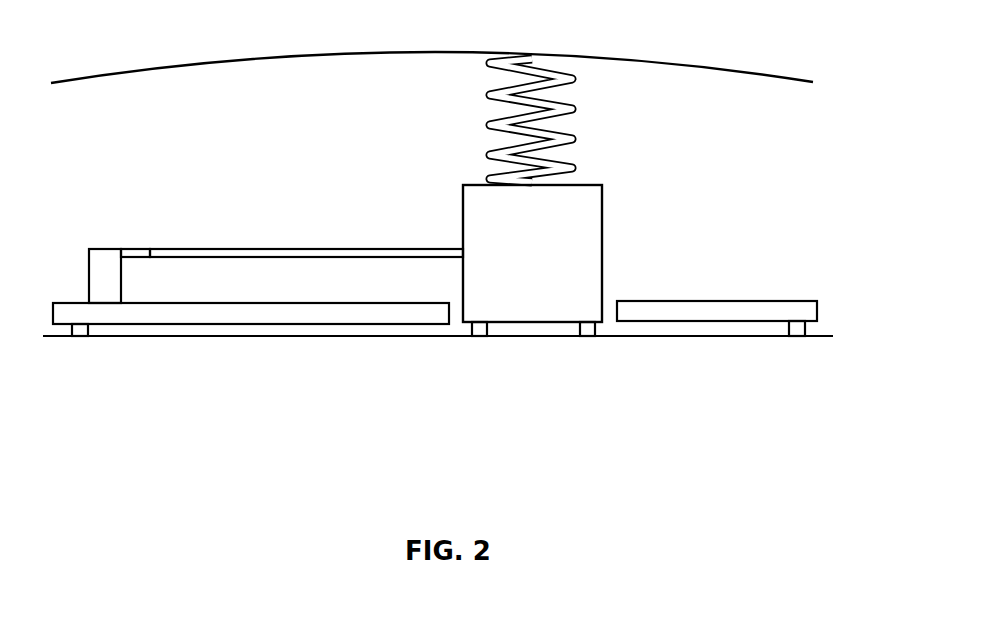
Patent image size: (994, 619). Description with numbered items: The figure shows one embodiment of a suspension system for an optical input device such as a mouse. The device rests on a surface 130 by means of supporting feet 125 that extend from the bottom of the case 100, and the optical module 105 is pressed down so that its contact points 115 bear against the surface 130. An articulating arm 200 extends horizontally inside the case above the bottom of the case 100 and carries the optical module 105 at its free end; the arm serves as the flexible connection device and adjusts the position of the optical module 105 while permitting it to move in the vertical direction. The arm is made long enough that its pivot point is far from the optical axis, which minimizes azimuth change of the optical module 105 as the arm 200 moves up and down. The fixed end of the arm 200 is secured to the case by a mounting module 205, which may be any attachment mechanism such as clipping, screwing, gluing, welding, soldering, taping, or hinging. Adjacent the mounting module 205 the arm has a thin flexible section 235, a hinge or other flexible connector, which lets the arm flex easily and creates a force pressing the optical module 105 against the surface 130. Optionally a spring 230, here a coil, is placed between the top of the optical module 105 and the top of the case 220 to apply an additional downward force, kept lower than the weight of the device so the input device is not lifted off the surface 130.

The case with an opening 100 is at (758, 301).
The optical module 105 is at (603, 212).
The contact points 115 is at (480, 337).
The supporting feet 125 is at (82, 338).
The surface 130 is at (312, 337).
The articulating arm 200 is at (283, 248).
The mounting module 205 is at (89, 272).
The top of the case 220 is at (632, 60).
The spring 230 is at (575, 108).
The flexible section 235 is at (137, 249).